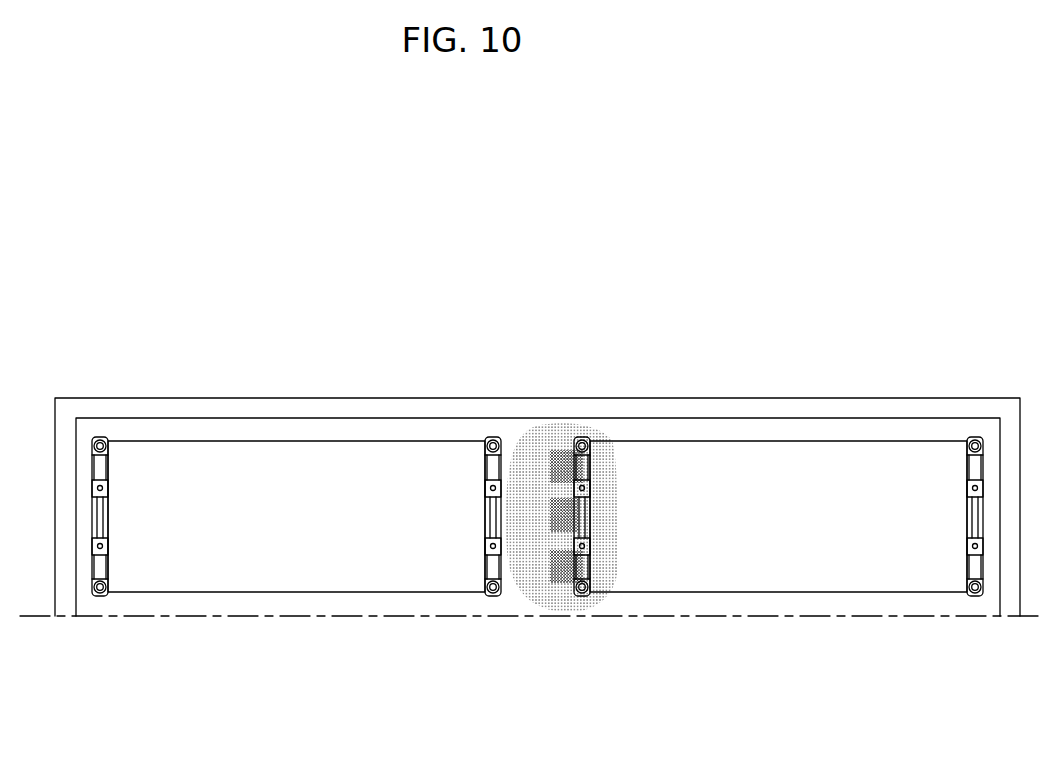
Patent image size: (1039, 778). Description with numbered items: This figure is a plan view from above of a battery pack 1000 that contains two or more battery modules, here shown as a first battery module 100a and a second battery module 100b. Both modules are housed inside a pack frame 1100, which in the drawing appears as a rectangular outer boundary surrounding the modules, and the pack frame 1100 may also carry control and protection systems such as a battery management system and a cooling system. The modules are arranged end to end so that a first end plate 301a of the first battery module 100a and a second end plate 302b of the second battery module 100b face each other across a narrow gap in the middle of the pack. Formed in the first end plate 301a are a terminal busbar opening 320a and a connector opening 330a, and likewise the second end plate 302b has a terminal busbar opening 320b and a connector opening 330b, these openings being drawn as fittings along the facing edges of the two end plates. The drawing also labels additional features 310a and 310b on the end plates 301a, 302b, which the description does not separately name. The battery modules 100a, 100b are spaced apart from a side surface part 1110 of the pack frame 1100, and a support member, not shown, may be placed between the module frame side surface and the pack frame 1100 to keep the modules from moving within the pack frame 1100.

The battery pack 1000 is at (402, 288).
The pack frame 1100 is at (100, 410).
The side surface part 1110 is at (205, 428).
The first battery module 100a is at (849, 467).
The second battery module 100b is at (290, 468).
The first end plate 301a is at (743, 335).
The second end plate 302b is at (305, 702).
The first connection member 310a is at (557, 552).
The terminal busbar opening 320a is at (590, 465).
The connector opening 330a is at (590, 501).
The second connection member 310b is at (482, 445).
The terminal busbar opening 320b is at (498, 465).
The connector opening 330b is at (495, 517).